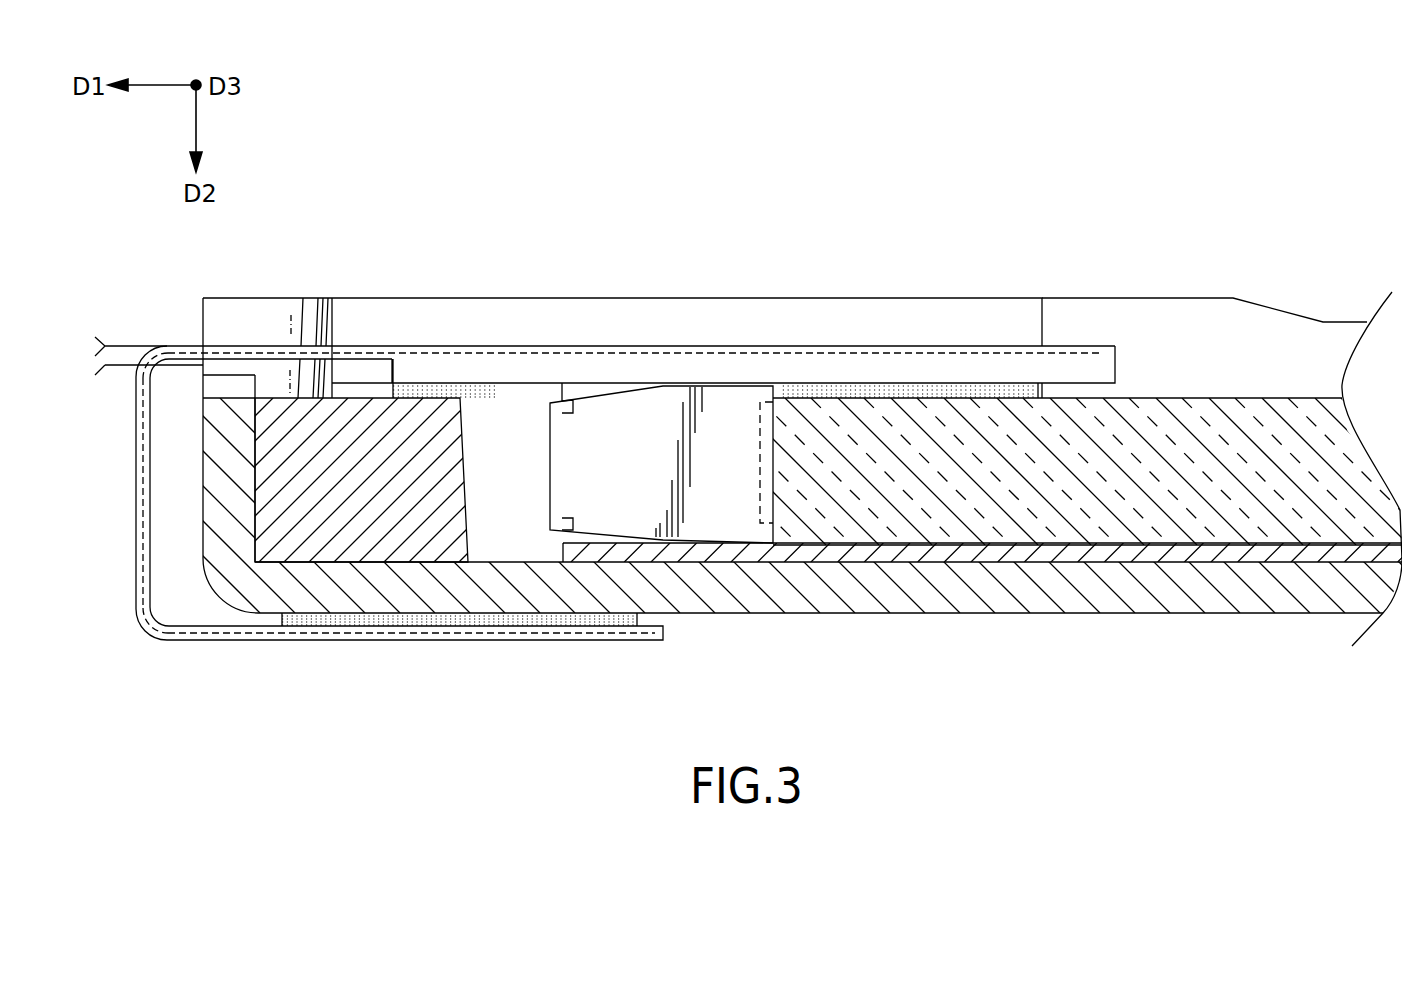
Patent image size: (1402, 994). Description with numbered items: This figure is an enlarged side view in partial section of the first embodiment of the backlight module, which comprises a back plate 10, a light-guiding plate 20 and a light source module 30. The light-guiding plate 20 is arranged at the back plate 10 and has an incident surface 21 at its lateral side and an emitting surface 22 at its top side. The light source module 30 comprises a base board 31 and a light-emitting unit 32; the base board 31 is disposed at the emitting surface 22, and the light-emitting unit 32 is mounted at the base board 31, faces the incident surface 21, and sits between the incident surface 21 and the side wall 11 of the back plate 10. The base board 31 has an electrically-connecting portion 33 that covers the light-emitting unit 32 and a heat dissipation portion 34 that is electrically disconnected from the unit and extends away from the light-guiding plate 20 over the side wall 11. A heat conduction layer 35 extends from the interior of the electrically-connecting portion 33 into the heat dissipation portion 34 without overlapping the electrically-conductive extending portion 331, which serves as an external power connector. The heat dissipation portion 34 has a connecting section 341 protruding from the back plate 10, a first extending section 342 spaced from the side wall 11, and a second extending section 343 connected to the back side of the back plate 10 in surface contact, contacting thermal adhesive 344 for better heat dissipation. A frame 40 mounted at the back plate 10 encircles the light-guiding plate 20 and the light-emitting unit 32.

The back plate 10 is at (1083, 613).
The side wall 11 is at (228, 493).
The light-guiding plate 20 is at (1260, 380).
The incident surface 21 is at (772, 512).
The emitting surface 22 is at (1182, 395).
The light source module 30 is at (410, 315).
The base board 31 is at (277, 320).
The light-emitting unit 32 is at (643, 420).
The electrically-connecting portion 33 is at (860, 370).
The heat dissipation portion 34 is at (126, 438).
The heat conduction layer 35 is at (763, 348).
The frame 40 is at (343, 510).
The electrically-conductive extending portion 331 is at (120, 348).
The connecting section 341 is at (237, 348).
The first extending section 342 is at (135, 558).
The second extending section 343 is at (524, 640).
The thermal adhesive 344 is at (609, 617).